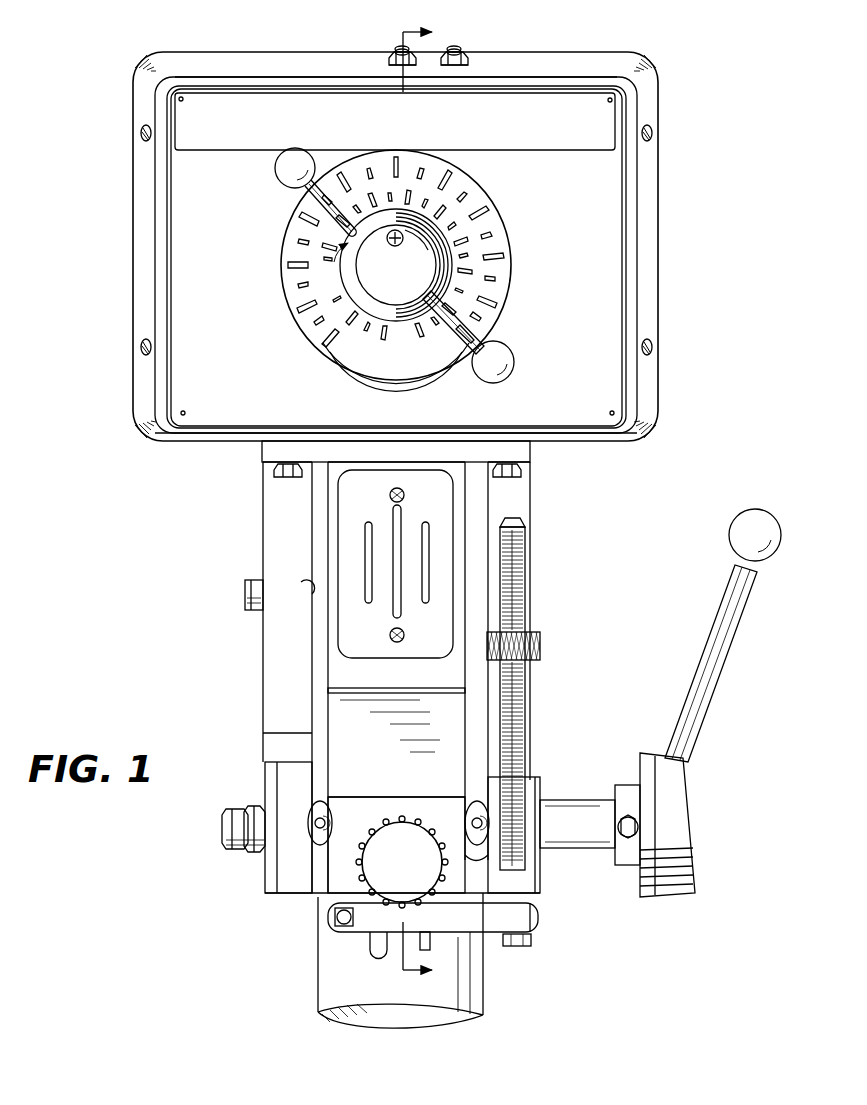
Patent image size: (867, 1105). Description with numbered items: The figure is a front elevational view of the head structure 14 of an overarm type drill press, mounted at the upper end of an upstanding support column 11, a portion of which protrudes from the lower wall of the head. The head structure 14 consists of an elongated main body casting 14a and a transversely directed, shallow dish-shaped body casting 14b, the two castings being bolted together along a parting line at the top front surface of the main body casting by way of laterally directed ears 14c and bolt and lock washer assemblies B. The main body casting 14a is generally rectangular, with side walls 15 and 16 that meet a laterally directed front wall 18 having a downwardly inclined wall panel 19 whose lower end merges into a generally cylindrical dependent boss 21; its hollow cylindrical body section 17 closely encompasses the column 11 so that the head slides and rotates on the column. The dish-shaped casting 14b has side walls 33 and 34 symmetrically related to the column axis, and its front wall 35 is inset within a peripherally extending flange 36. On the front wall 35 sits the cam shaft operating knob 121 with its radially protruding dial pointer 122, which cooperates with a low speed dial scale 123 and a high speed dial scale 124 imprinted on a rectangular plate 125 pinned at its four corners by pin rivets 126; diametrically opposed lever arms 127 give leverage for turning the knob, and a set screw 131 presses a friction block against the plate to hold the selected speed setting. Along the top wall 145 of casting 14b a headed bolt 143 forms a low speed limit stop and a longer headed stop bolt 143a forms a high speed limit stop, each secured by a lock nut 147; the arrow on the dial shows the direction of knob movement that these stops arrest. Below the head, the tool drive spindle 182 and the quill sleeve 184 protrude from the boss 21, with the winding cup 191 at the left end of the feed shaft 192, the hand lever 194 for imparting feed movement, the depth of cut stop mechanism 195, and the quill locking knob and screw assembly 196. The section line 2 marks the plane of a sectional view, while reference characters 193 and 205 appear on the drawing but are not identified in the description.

The support column 11 is at (472, 990).
The head structure 14 is at (542, 660).
The main body casting 14a is at (318, 521).
The dish-shaped body casting 14b is at (176, 447).
The ears 14c is at (268, 456).
The side wall 15 is at (328, 549).
The side wall 16 is at (488, 513).
The hollow cylindrical body section 17 is at (286, 697).
The front wall 18 is at (338, 665).
The wall panel 19 is at (404, 748).
The dependent boss 21 is at (408, 818).
The side wall 33 is at (145, 240).
The side wall 34 is at (637, 246).
The front wall 35 is at (168, 270).
The flange 36 is at (162, 378).
The cam shaft operating knob 121 is at (385, 265).
The dial pointer 122 is at (340, 320).
The low speed dial scale 123 is at (436, 340).
The high speed dial scale 124 is at (300, 325).
The rectangular plate 125 is at (616, 382).
The pin rivets 126 is at (182, 100).
The lever arms 127 is at (318, 184).
The set screw 131 is at (428, 250).
The headed bolt 143 is at (396, 48).
The headed stop bolt 143a is at (456, 48).
The top wall 145 is at (292, 52).
The lock nut 147 is at (390, 58).
The tool drive spindle 182 is at (432, 944).
The quill sleeve 184 is at (366, 937).
The winding cup 191 is at (290, 895).
The feed shaft 192 is at (600, 800).
The lock nuts 193 is at (246, 850).
The hand lever 194 is at (716, 630).
The depth of cut stop mechanism 195 is at (538, 917).
The quill locking knob and screw assembly 196 is at (418, 872).
The mounting holes 205 is at (141, 133).
The section line 2 is at (410, 501).
The bolt and lock washer assemblies B is at (284, 476).